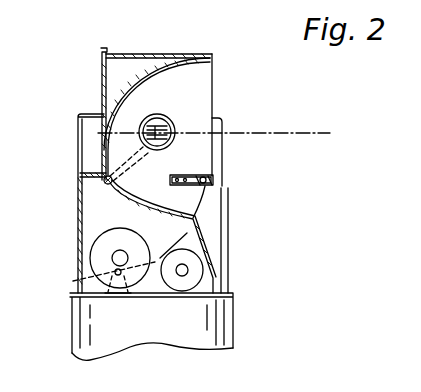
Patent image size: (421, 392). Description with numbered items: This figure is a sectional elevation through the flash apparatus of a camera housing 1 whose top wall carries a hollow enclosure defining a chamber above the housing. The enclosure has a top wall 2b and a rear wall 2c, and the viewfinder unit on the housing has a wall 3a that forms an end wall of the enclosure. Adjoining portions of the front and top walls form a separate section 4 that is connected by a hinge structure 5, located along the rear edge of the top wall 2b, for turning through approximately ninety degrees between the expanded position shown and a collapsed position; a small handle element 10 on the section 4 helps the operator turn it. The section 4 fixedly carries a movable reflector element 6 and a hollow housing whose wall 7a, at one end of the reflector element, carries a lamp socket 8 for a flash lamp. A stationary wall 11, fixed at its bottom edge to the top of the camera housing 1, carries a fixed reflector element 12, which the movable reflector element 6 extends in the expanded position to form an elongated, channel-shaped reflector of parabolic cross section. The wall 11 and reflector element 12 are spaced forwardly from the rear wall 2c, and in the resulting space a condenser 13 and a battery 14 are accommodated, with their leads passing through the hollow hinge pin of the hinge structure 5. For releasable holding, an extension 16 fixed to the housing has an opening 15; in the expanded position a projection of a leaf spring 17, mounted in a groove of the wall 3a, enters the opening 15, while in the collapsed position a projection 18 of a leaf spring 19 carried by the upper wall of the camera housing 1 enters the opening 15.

The camera housing 1 is at (193, 313).
The top wall 2b is at (90, 172).
The rear wall 2c is at (77, 213).
The wall 3a is at (218, 124).
The section 4 is at (130, 53).
The hinge structure 5 is at (107, 184).
The movable reflector element 6 is at (150, 76).
The wall 7a is at (200, 76).
The lamp socket 8 is at (170, 119).
The handle element 10 is at (103, 51).
The stationary wall 11 is at (204, 247).
The fixed reflector element 12 is at (194, 218).
The condenser 13 is at (195, 272).
The battery 14 is at (98, 250).
The opening 15 is at (208, 180).
The extension 16 is at (214, 182).
The leaf spring 17 is at (194, 176).
The projection 18 is at (74, 281).
The leaf spring 19 is at (104, 293).